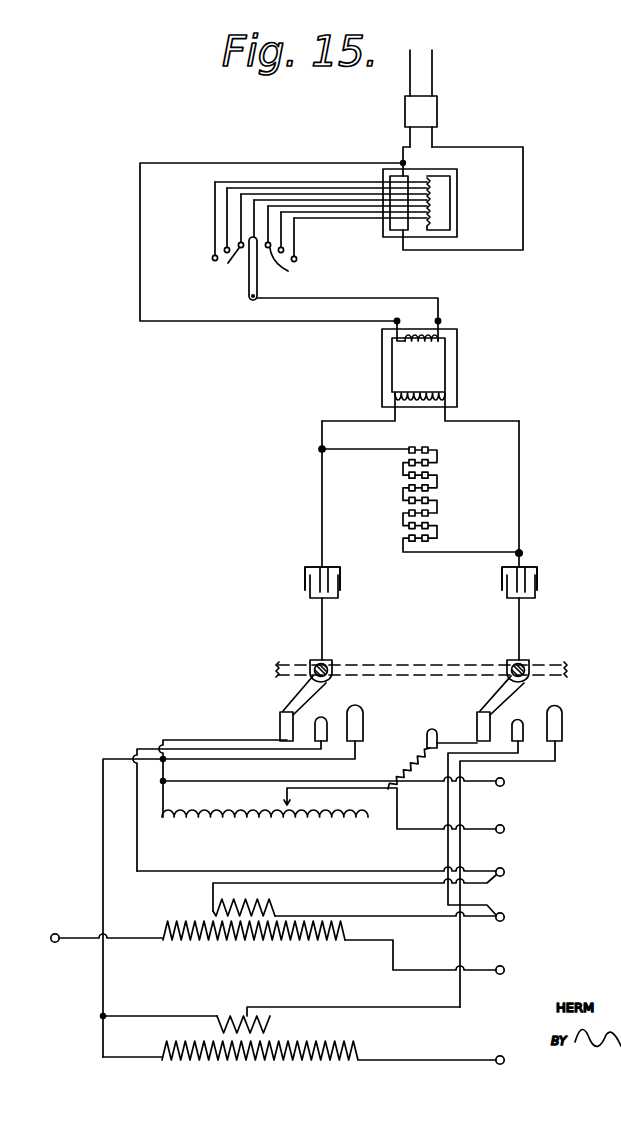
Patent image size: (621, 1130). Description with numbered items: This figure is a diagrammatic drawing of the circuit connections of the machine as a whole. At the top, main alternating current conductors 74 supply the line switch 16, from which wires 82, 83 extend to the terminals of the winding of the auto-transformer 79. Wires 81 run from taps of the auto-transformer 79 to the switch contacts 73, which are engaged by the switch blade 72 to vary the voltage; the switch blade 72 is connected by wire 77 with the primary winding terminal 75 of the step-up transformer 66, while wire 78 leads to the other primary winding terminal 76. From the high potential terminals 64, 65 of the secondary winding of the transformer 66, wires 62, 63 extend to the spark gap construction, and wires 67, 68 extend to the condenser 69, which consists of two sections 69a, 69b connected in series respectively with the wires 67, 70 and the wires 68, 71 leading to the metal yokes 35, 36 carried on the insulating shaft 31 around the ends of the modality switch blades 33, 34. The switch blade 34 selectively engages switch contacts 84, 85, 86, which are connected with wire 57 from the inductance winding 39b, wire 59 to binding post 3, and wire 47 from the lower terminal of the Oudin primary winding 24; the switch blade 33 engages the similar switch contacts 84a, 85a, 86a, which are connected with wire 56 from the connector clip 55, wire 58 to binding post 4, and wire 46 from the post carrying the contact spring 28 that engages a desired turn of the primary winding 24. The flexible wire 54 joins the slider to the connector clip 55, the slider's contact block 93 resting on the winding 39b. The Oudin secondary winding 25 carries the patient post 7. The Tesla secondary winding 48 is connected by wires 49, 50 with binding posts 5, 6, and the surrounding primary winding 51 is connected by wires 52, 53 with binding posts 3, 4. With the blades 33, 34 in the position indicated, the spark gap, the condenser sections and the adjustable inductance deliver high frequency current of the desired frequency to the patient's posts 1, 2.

The binding post 1 is at (343, 784).
The binding post 2 is at (510, 830).
The binding post 3 is at (331, 872).
The binding post 4 is at (510, 917).
The binding post 5 is at (510, 972).
The binding post 6 is at (47, 937).
The post or electric connection 7 is at (510, 1060).
The line switch 16 is at (421, 111).
The primary winding 24 is at (243, 1016).
The secondary winding 25 is at (270, 1061).
The contact spring 28 is at (272, 1012).
The shaft 31 is at (413, 664).
The switch blade 33 is at (498, 690).
The switch blade 34 is at (300, 687).
The metal yoke 35 is at (507, 661).
The metal yoke 36 is at (330, 660).
The winding 39b is at (265, 827).
The wire 46 is at (459, 939).
The wire 47 is at (103, 770).
The secondary winding 48 is at (300, 941).
The wire 49 is at (392, 957).
The wire 50 is at (121, 940).
The primary winding 51 is at (252, 895).
The wire 52 is at (369, 885).
The wire 53 is at (373, 916).
The flexible wire 54 is at (414, 753).
The connector clip 55 is at (429, 753).
The wire 56 is at (453, 740).
The wire 57 is at (231, 739).
The wire 58 is at (447, 803).
The wire 59 is at (149, 747).
The wire 62 is at (464, 551).
The wire 63 is at (380, 446).
The high potential terminal 64 is at (520, 549).
The high potential terminal 65 is at (319, 449).
The step-up transformer 66 is at (420, 375).
The wire 67 is at (523, 560).
The wire 68 is at (320, 503).
The condenser 69 is at (502, 578).
The condenser section 69a is at (537, 579).
The condenser section 69b is at (305, 578).
The wire 70 is at (521, 622).
The wire 71 is at (321, 620).
The switch blade 72 is at (249, 279).
The switch contacts 73 is at (262, 265).
The main alternating current conductors 74 is at (409, 78).
The primary winding terminal 75 is at (441, 321).
The primary winding terminal 76 is at (399, 322).
The wire 77 is at (388, 298).
The wire 78 is at (170, 163).
The auto-transformer 79 is at (458, 200).
The wires 81 is at (400, 194).
The wire 82 is at (406, 136).
The wire 83 is at (515, 141).
The switch contact 84 is at (279, 722).
The switch contact 84a is at (476, 713).
The switch contact 85 is at (322, 717).
The switch contact 85a is at (524, 718).
The switch contact 86 is at (358, 712).
The switch contact 86a is at (574, 715).
The contact block 93 is at (285, 791).